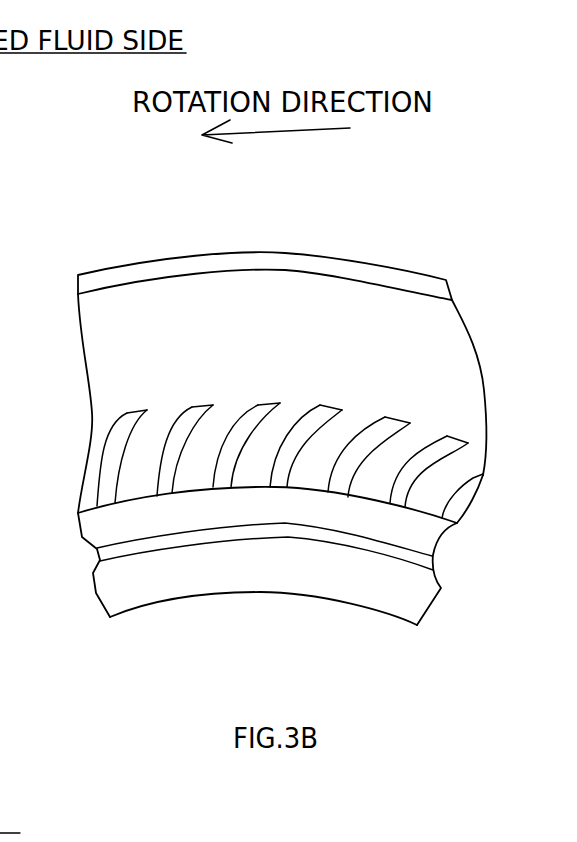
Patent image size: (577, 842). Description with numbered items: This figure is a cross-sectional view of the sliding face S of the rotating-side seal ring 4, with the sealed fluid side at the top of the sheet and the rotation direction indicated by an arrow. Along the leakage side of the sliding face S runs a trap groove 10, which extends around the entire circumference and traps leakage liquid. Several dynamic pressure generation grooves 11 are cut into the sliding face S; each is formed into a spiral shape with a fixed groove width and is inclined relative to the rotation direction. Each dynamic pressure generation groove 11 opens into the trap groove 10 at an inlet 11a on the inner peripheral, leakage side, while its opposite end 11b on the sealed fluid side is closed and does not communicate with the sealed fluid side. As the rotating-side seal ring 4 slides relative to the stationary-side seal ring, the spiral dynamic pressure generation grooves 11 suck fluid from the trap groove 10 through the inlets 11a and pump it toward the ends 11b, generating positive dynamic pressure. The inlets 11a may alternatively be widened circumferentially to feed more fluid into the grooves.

The rotating-side seal ring 4 is at (290, 257).
The trap groove 10 is at (390, 530).
The dynamic pressure generation groove 11 is at (293, 447).
The inlet 11a is at (272, 489).
The end on the sealed fluid side 11b is at (262, 404).
The sliding face S is at (137, 333).